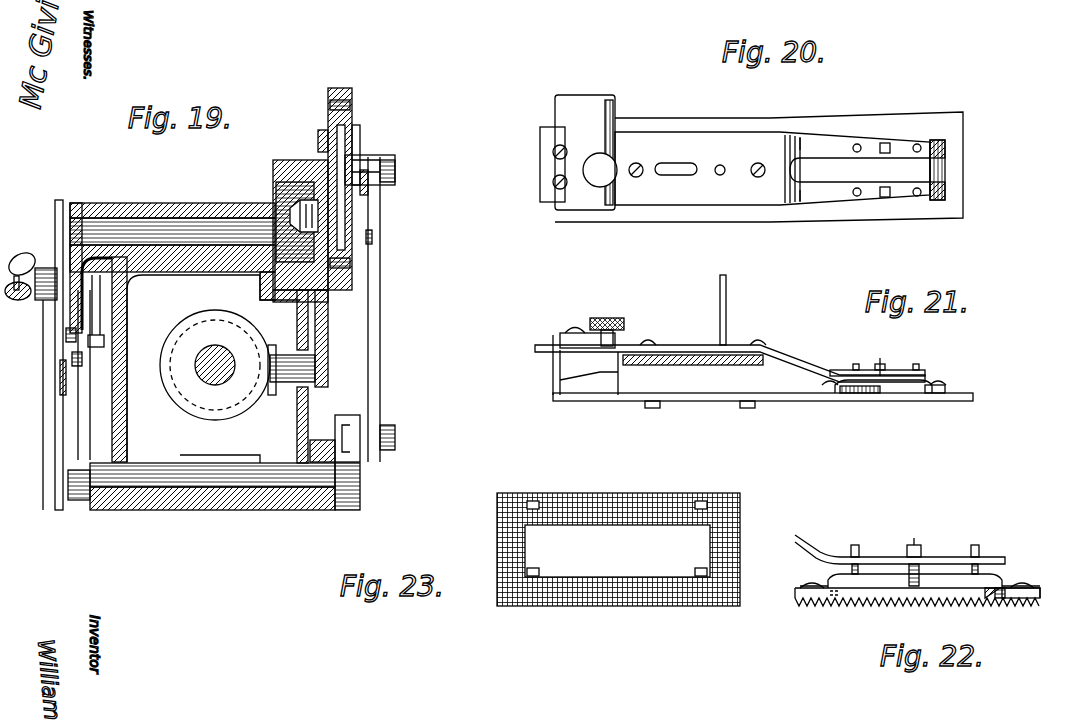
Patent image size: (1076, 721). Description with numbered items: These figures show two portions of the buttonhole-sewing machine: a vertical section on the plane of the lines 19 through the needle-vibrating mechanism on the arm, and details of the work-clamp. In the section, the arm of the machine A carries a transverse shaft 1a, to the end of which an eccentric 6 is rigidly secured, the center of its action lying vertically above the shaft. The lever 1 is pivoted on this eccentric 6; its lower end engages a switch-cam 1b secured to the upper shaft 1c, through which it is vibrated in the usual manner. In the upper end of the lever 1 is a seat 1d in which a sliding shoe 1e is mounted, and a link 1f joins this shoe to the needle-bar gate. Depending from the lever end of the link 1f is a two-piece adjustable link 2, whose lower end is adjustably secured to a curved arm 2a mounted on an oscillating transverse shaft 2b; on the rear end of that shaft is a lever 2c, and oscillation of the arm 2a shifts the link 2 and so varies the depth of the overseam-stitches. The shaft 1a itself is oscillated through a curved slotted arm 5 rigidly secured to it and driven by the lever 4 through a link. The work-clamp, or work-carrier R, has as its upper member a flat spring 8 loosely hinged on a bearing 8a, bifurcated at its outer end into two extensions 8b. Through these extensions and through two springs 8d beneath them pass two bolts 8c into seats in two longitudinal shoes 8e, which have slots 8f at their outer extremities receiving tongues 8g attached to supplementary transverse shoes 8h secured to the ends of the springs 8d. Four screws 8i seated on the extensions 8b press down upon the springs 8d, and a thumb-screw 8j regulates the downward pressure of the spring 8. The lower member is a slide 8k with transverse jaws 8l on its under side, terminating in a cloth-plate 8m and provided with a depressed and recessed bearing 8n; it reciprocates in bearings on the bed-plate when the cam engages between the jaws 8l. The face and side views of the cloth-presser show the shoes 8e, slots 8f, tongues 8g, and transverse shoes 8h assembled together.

In FIG. 19, the bearing plate 19 is at (352, 105).
In FIG. 19, the transverse shaft 1a is at (155, 215).
In FIG. 19, the seat 1d is at (345, 135).
In FIG. 19, the sliding shoe 1e is at (345, 162).
In FIG. 19, the link 1f is at (370, 190).
In FIG. 19, the eccentric 6 is at (280, 188).
In FIG. 19, the curved slotted arm 5 is at (72, 262).
In FIG. 19, the lever 4 is at (46, 440).
In FIG. 19, the lever 2c is at (74, 375).
In FIG. 19, the arm of the machine A is at (213, 368).
In FIG. 19, the lever 1 is at (329, 328).
In FIG. 19, the switch-cam 1b is at (218, 365).
In FIG. 19, the upper shaft 1c is at (207, 385).
In FIG. 19, the link 2 is at (381, 362).
In FIG. 19, the transverse shaft 2b is at (272, 464).
In FIG. 19, the curved arm 2a is at (360, 480).
In FIG. 20, the work-carrier R is at (759, 156).
In FIG. 21, the work-carrier R is at (763, 385).
In FIG. 20, the bearing 8a is at (577, 152).
In FIG. 21, the bearing 8a is at (560, 340).
In FIG. 20, the tongues 8g is at (600, 170).
In FIG. 23, the tongues 8g is at (712, 500).
In FIG. 22, the tongues 8g is at (840, 598).
In FIG. 20, the flat spring 8 is at (772, 168).
In FIG. 21, the flat spring 8 is at (672, 350).
In FIG. 22, the flat spring 8 is at (1006, 554).
In FIG. 20, the slide 8k is at (662, 216).
In FIG. 21, the slide 8k is at (605, 400).
In FIG. 20, the supplementary transverse shoes 8h is at (946, 174).
In FIG. 21, the supplementary transverse shoes 8h is at (945, 386).
In FIG. 23, the supplementary transverse shoes 8h is at (500, 546).
In FIG. 22, the supplementary transverse shoes 8h is at (1040, 598).
In FIG. 20, the depressed and recessed bearing 8n is at (935, 140).
In FIG. 20, the screws 8i is at (852, 145).
In FIG. 21, the screws 8i is at (918, 366).
In FIG. 22, the screws 8i is at (855, 545).
In FIG. 20, the extensions 8b is at (870, 140).
In FIG. 21, the extensions 8b is at (845, 370).
In FIG. 22, the extensions 8b is at (880, 556).
In FIG. 20, the bolts 8c is at (885, 153).
In FIG. 21, the bolts 8c is at (882, 356).
In FIG. 22, the bolts 8c is at (918, 552).
In FIG. 20, the cloth-plate 8m is at (964, 208).
In FIG. 21, the cloth-plate 8m is at (972, 396).
In FIG. 21, the thumb-screw 8j is at (606, 318).
In FIG. 21, the springs 8d is at (832, 378).
In FIG. 22, the springs 8d is at (832, 578).
In FIG. 21, the longitudinal shoes 8e is at (895, 396).
In FIG. 23, the longitudinal shoes 8e is at (600, 495).
In FIG. 22, the longitudinal shoes 8e is at (908, 598).
In FIG. 21, the transverse jaws 8l is at (658, 408).
In FIG. 23, the longitudinal slots 8f is at (532, 500).
In FIG. 22, the longitudinal slots 8f is at (1002, 600).